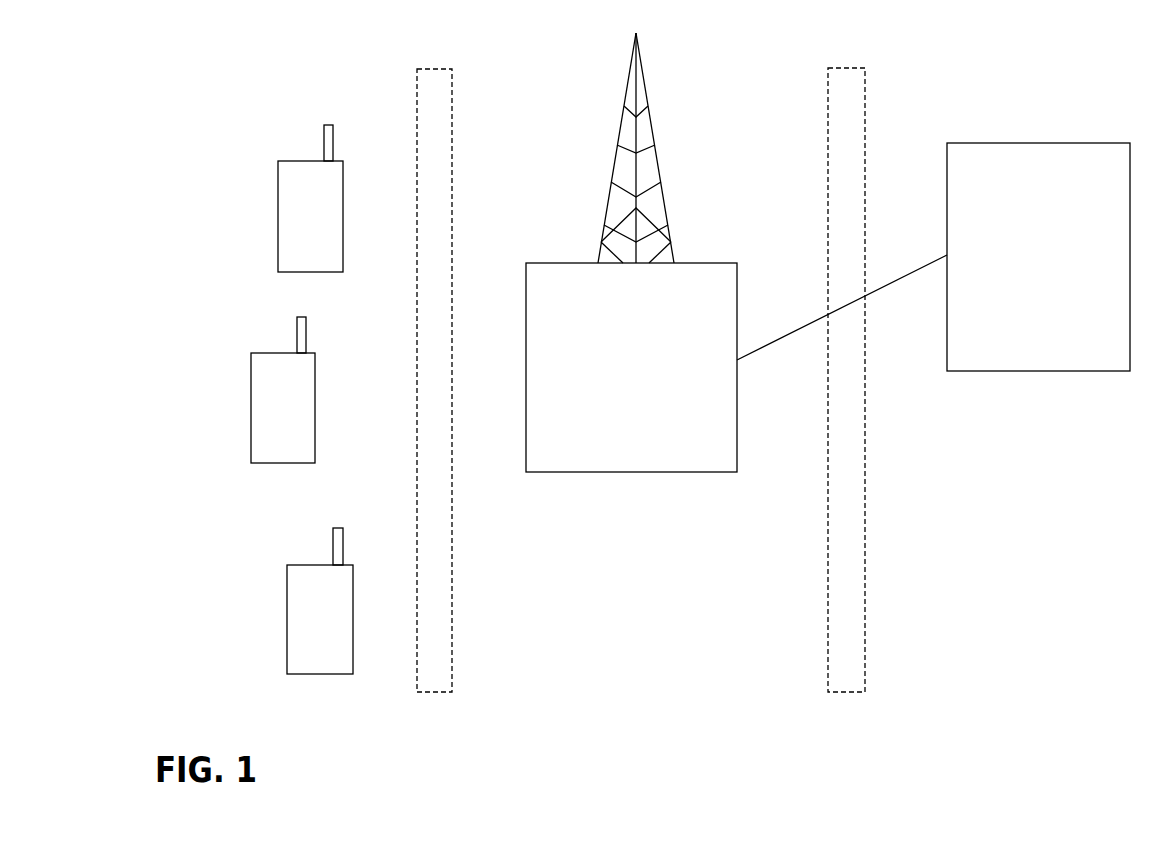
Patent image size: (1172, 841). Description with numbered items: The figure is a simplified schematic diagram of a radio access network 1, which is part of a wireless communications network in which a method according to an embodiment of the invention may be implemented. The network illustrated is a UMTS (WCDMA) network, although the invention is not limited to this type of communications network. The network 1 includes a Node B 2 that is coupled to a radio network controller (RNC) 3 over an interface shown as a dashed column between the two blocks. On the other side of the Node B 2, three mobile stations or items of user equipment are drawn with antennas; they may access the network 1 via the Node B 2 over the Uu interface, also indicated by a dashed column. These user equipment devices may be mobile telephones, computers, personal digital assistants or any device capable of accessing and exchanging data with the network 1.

The radio access network 1 is at (300, 91).
The Node B 2 is at (667, 472).
The radio network controller 3 is at (1053, 371).